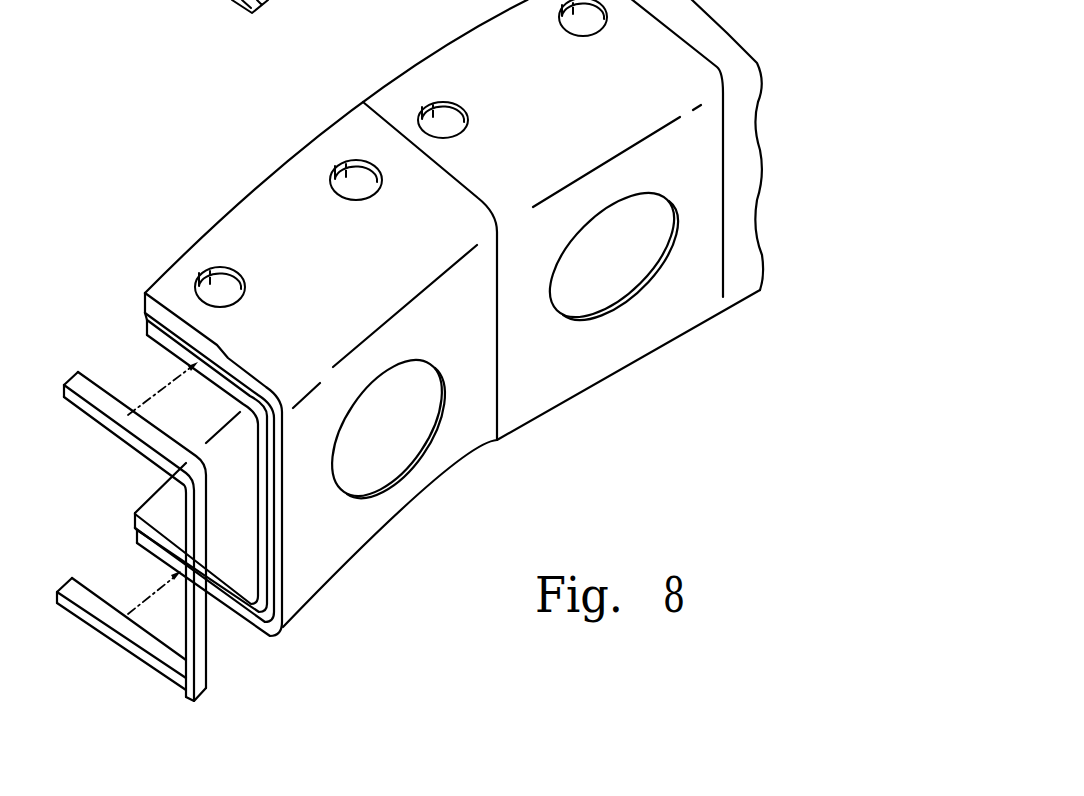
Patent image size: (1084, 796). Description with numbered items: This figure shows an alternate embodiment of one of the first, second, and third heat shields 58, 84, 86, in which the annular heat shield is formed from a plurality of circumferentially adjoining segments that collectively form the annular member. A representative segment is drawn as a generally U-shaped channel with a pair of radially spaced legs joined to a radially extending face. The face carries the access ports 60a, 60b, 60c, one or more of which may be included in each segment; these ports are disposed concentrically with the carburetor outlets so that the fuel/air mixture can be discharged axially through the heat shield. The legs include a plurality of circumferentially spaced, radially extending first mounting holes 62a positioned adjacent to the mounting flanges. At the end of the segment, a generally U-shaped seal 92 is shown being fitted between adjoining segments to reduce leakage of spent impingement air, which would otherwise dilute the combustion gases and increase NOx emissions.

The first heat shield 58 is at (531, 437).
The second heat shield 84 is at (406, 467).
The third heat shield 86 is at (427, 462).
The first mounting holes 62a is at (580, 18).
The first access ports 60a is at (556, 343).
The access ports 60b is at (651, 284).
The access ports 60c is at (796, 382).
The U-shaped seal 92 is at (208, 670).